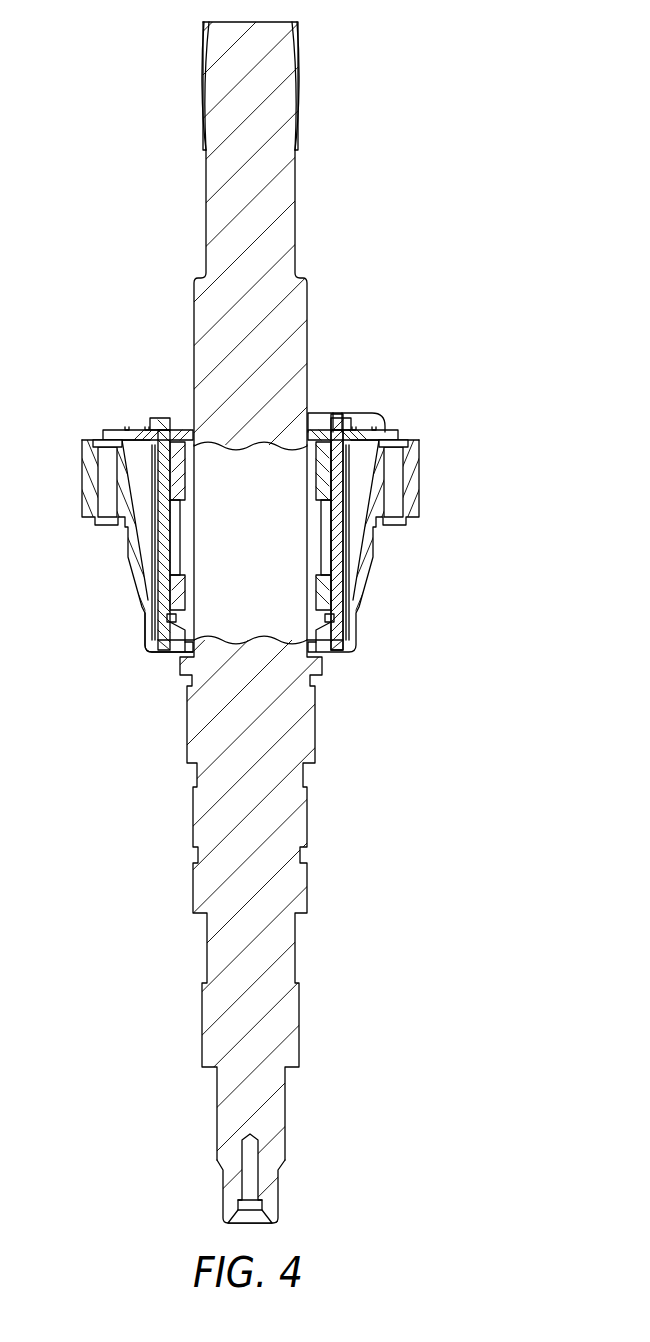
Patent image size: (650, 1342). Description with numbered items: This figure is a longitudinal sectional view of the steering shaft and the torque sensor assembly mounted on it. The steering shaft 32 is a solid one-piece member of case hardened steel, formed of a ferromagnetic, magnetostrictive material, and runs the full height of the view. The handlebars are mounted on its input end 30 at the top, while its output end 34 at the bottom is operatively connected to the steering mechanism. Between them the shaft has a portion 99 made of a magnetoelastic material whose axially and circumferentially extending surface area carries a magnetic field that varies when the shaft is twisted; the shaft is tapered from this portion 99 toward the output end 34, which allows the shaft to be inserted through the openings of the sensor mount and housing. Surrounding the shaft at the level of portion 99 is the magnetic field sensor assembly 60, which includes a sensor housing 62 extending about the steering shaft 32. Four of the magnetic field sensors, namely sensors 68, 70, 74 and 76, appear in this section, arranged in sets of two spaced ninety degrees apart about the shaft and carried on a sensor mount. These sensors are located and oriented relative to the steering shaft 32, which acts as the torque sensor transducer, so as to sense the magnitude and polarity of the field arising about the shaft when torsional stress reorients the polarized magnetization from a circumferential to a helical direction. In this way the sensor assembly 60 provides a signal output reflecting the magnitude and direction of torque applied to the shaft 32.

The input end 30 is at (254, 80).
The steering shaft 32 is at (255, 740).
The output end 34 is at (282, 1195).
The magnetic field sensor assembly 60 is at (286, 503).
The sensor housing 62 is at (377, 420).
The magnetic field sensor 68 is at (352, 462).
The magnetic field sensor 70 is at (330, 588).
The magnetic field sensor 74 is at (143, 442).
The magnetic field sensor 76 is at (170, 587).
The portion 99 is at (247, 539).